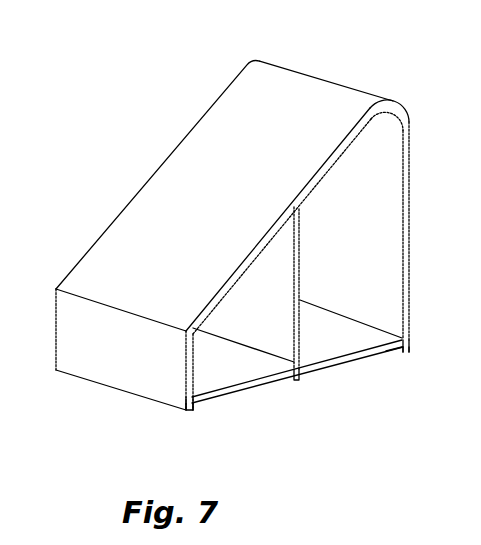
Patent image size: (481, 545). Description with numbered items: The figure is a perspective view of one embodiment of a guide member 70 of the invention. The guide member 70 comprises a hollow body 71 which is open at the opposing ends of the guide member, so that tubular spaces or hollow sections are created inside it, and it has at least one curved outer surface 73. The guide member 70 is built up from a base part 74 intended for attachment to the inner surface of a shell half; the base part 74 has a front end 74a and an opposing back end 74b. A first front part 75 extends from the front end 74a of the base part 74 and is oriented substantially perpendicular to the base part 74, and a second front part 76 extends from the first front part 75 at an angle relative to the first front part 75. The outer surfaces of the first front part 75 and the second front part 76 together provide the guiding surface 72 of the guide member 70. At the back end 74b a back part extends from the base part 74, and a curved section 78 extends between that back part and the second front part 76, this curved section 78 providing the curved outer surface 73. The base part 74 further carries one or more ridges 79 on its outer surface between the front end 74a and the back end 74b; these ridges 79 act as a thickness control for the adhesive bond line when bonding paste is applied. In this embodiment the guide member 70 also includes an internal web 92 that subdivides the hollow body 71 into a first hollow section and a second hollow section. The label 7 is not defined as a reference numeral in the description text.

The guide member 70 is at (201, 68).
The back wall 7 is at (410, 188).
The hollow body 71 is at (410, 258).
The guiding surface 72 is at (251, 190).
The curved outer surface 73 is at (397, 107).
The base part 74 is at (262, 378).
The front end 74a is at (183, 405).
The back end 74b is at (408, 347).
The first front part 75 is at (67, 327).
The second front part 76 is at (174, 202).
The curved section 78 is at (403, 115).
The ridges 79 is at (302, 378).
The internal web 92 is at (284, 290).